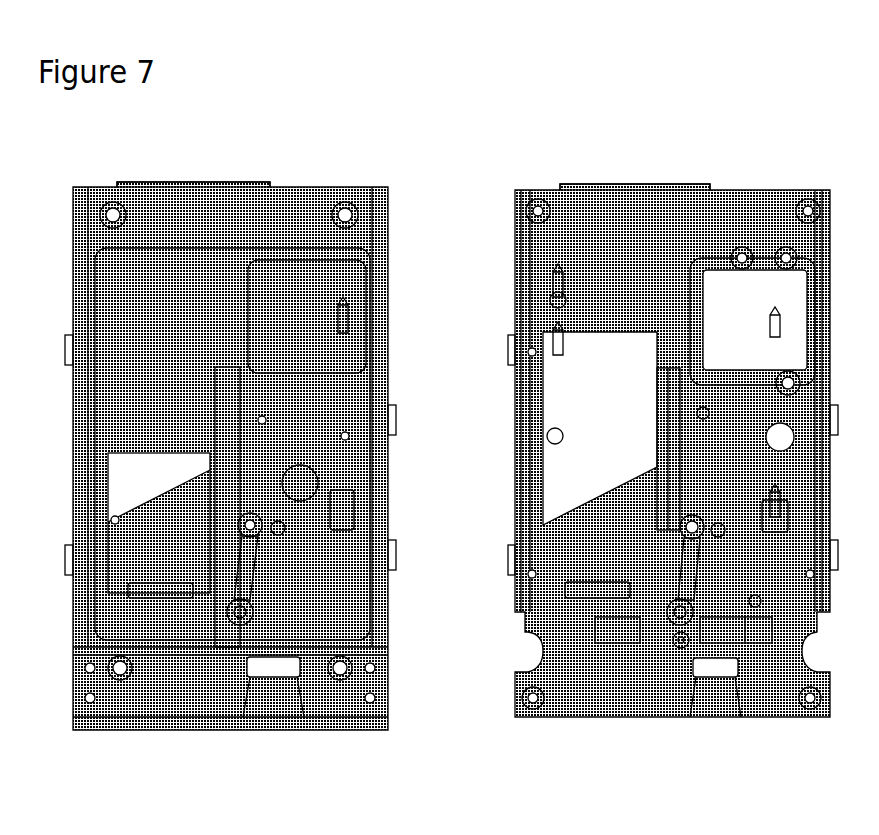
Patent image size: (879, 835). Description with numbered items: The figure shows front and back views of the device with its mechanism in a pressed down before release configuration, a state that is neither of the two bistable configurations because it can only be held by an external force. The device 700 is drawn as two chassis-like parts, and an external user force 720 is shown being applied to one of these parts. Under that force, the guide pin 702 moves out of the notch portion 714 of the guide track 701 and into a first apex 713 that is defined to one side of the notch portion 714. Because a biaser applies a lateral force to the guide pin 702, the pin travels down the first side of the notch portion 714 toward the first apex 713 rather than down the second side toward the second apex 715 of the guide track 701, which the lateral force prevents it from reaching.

The chassis / cassette body 700 is at (655, 425).
The guide track 701 is at (670, 400).
The guide pin 702 is at (680, 610).
The first apex 713 is at (670, 623).
The notch portion 714 is at (697, 587).
The second apex 715 is at (718, 630).
The external user force 720 is at (652, 176).